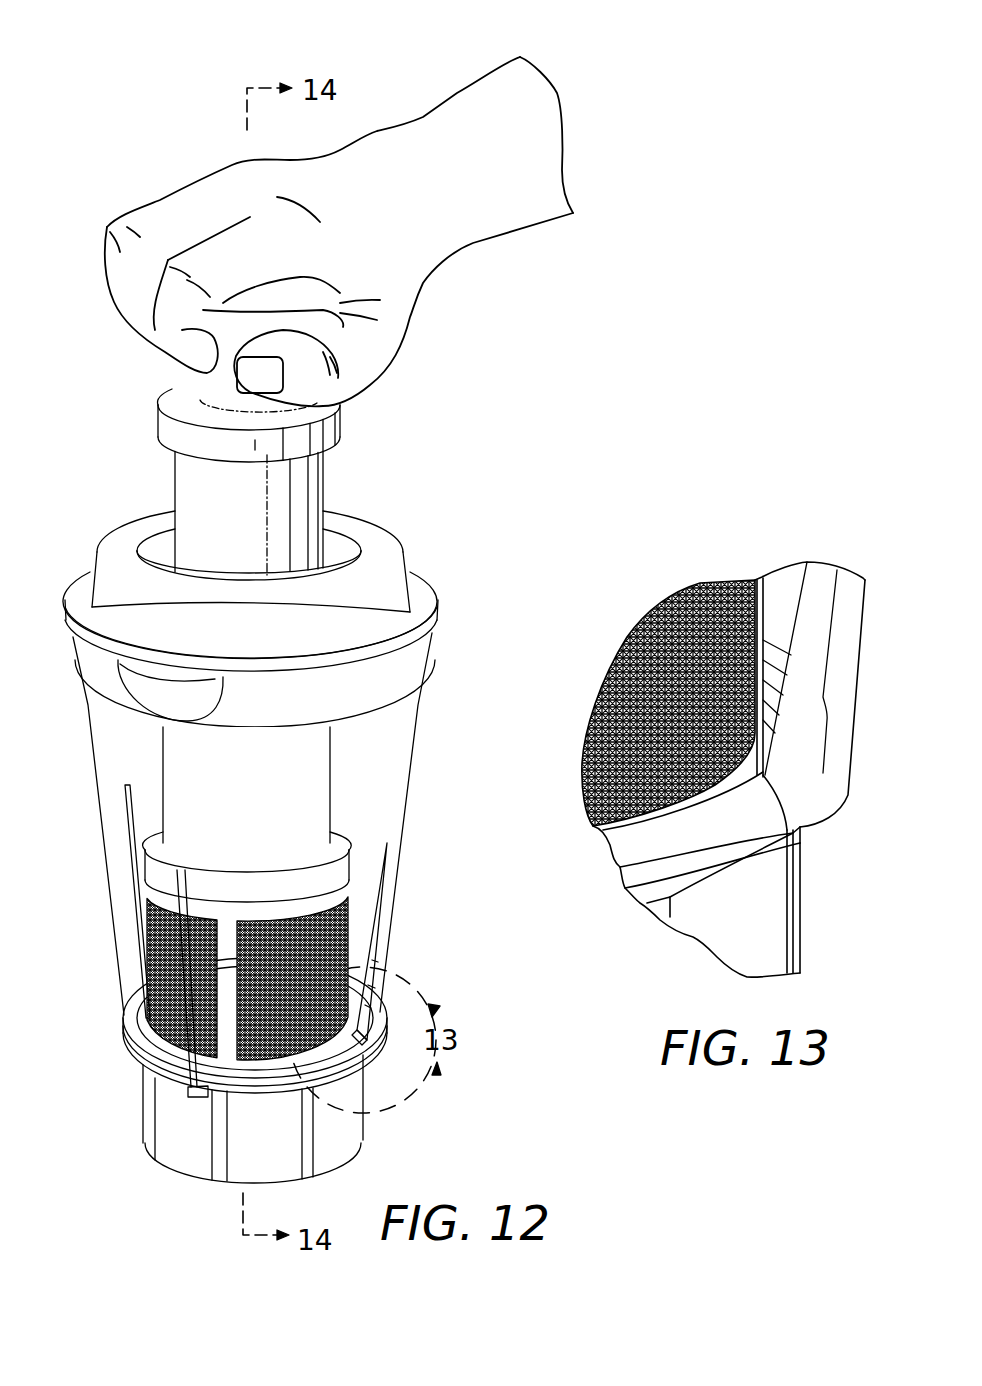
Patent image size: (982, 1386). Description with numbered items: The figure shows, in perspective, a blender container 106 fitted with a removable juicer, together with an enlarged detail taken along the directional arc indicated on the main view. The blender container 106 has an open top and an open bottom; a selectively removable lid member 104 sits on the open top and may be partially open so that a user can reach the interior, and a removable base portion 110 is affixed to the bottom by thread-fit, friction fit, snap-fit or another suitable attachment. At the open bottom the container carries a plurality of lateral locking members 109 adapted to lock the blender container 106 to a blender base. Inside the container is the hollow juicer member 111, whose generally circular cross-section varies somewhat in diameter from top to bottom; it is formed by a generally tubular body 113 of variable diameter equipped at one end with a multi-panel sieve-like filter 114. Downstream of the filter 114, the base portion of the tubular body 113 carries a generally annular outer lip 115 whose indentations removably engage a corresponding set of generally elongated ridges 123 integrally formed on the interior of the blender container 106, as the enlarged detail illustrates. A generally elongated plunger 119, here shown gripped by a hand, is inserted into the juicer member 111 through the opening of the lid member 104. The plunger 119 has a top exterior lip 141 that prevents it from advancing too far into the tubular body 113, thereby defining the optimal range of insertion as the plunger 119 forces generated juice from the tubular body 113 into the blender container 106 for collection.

In FIG. 12, the lid member 104 is at (377, 597).
In FIG. 12, the blender container 106 is at (385, 797).
In FIG. 12, the lateral locking members 109 is at (145, 1065).
In FIG. 12, the removable base portion 110 is at (183, 1113).
In FIG. 12, the juicer member 111 is at (193, 760).
In FIG. 12, the tubular body 113 is at (315, 758).
In FIG. 12, the multi-panel sieve-like filter 114 is at (333, 925).
In FIG. 13, the multi-panel sieve-like filter 114 is at (727, 615).
In FIG. 12, the annular outer lip 115 is at (347, 1043).
In FIG. 13, the annular outer lip 115 is at (768, 733).
In FIG. 12, the plunger 119 is at (300, 492).
In FIG. 12, the elongated ridges 123 is at (145, 910).
In FIG. 13, the elongated ridges 123 is at (800, 713).
In FIG. 12, the top exterior lip 141 is at (330, 427).